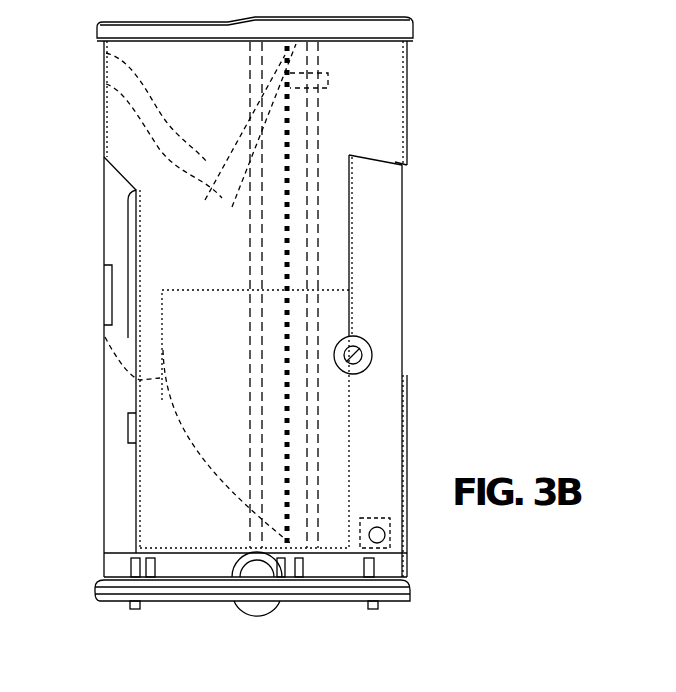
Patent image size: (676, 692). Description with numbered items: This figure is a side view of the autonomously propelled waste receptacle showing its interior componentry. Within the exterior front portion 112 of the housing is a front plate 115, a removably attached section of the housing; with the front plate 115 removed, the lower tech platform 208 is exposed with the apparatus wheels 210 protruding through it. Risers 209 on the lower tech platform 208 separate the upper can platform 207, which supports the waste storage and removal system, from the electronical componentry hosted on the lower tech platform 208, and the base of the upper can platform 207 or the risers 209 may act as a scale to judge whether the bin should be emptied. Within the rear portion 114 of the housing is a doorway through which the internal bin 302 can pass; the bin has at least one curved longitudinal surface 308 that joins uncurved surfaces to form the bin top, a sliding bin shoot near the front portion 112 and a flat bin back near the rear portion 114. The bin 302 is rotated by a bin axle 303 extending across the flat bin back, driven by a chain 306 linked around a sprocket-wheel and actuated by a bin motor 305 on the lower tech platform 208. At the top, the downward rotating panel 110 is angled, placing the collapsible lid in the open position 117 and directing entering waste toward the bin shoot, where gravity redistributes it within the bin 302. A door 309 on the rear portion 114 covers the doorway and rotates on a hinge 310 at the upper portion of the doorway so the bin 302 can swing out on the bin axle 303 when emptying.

The chain 306 is at (255, 20).
The downward rotating panel 110 is at (106, 54).
The open position 117 is at (106, 86).
The rear portion 114 is at (407, 56).
The front plate 115 is at (104, 213).
The exterior front portion 112 is at (104, 264).
The hinge 310 is at (408, 165).
The door 309 is at (403, 206).
The curved longitudinal surface 308 is at (103, 320).
The bin axle 303 is at (366, 350).
The internal bin 302 is at (195, 404).
The bin motor 305 is at (385, 537).
The lower tech platform 208 is at (408, 583).
The upper can platform 207 is at (193, 556).
The apparatus wheels 210 is at (257, 603).
The risers 209 is at (362, 578).